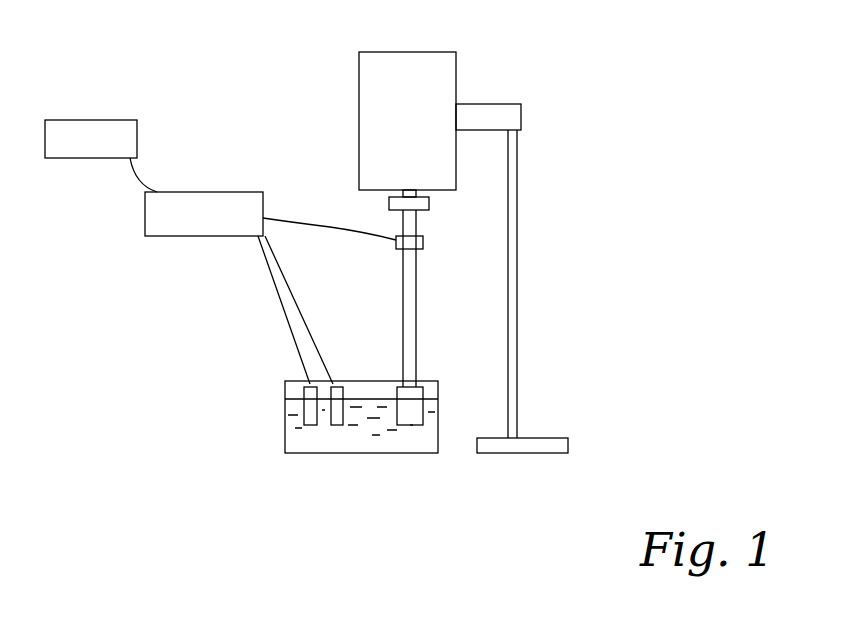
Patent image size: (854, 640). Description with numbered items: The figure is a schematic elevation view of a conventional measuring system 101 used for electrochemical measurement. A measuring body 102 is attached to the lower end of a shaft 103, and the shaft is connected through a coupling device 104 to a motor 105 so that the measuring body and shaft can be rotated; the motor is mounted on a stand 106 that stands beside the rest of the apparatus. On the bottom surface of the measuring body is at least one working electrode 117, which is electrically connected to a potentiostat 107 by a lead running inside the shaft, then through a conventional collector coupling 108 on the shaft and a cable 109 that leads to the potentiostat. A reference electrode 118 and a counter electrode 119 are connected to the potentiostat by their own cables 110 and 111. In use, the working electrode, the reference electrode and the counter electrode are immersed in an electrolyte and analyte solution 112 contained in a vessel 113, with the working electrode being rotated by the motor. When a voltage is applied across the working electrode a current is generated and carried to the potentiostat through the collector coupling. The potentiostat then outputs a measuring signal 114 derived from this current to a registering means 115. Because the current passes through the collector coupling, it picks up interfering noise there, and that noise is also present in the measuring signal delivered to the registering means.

The measuring system 101 is at (262, 106).
The measuring body 102 is at (423, 392).
The shaft 103 is at (416, 285).
The coupling device 104 is at (429, 205).
The motor 105 is at (457, 63).
The stand 106 is at (527, 229).
The potentiostat 107 is at (177, 238).
The collector coupling 108 is at (423, 247).
The cable 109 is at (330, 225).
The cable 110 is at (282, 298).
The cable 111 is at (302, 305).
The electrolyte and analyte solution 112 is at (288, 395).
The vessel 113 is at (285, 435).
The measuring signal 114 is at (149, 179).
The registering means 115 is at (70, 119).
The working electrode 117 is at (413, 430).
The reference electrode 118 is at (298, 375).
The counter electrode 119 is at (377, 367).